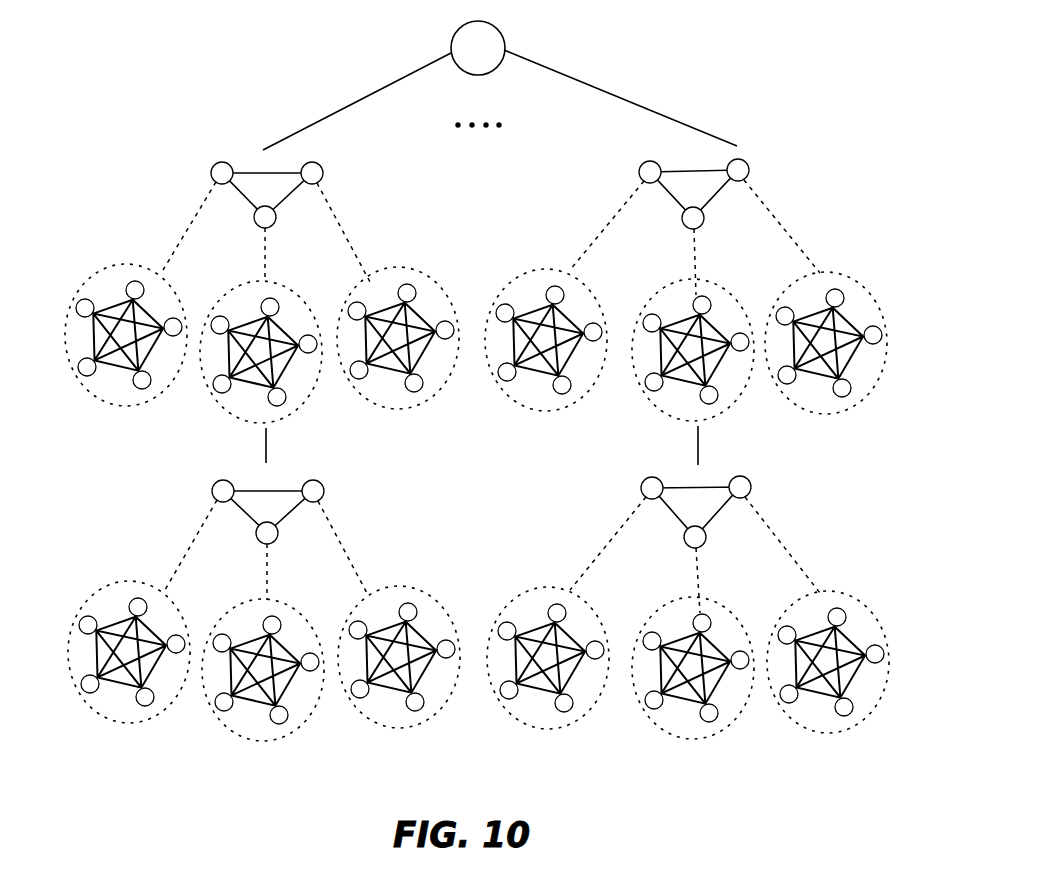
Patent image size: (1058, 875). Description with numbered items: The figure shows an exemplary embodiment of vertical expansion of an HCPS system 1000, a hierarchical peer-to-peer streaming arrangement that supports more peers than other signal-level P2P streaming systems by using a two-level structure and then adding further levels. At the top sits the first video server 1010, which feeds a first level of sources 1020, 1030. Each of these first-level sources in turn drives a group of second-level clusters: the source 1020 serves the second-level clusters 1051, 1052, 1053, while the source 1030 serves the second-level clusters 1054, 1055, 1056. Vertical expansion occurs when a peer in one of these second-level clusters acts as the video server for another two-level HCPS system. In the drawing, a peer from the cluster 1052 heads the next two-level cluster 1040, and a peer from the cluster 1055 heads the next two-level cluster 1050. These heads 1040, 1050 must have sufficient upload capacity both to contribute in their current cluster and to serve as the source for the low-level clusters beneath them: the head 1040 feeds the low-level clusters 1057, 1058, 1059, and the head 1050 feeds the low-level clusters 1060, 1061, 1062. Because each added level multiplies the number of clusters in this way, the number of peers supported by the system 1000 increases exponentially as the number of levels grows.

The vertically expanded HCPS system 1000 is at (780, 40).
The first video server 1010 is at (503, 35).
The first level source 1020 is at (322, 168).
The first level source 1030 is at (748, 162).
The next two-level cluster head 1040 is at (323, 487).
The next two-level cluster head 1050 is at (751, 483).
The second level cluster 1051 is at (142, 400).
The second level cluster 1052 is at (287, 417).
The second level cluster 1053 is at (403, 410).
The second level cluster 1054 is at (548, 413).
The second level cluster 1055 is at (715, 418).
The second level cluster 1056 is at (833, 416).
The low-level cluster 1057 is at (132, 720).
The low-level cluster 1058 is at (280, 740).
The low-level cluster 1059 is at (418, 725).
The low-level cluster 1060 is at (555, 731).
The low-level cluster 1061 is at (698, 742).
The low-level cluster 1062 is at (830, 735).